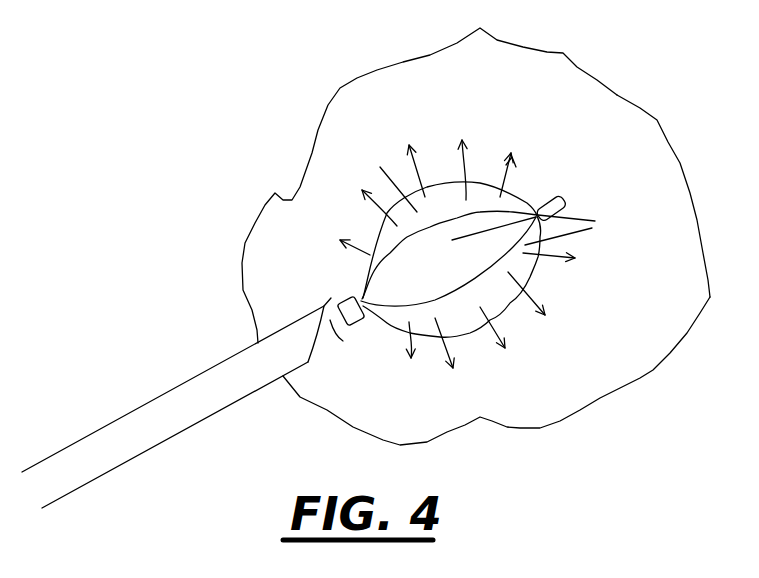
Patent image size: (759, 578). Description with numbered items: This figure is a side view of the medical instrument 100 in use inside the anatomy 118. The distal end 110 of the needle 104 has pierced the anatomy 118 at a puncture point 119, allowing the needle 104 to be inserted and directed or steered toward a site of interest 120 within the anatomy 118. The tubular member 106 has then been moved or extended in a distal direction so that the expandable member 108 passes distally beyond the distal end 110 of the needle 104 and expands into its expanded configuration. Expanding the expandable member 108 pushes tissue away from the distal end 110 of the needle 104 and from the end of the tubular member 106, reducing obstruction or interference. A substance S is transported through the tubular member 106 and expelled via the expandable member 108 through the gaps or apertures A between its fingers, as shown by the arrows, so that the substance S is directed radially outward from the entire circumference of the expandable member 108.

The medical instrument 100 is at (157, 298).
The needle 104 is at (88, 460).
The tubular member 106 is at (329, 326).
The expandable member 108 is at (491, 123).
The distal end of the needle 110 is at (310, 355).
The anatomy 118 is at (476, 236).
The puncture point 119 is at (258, 343).
The site of interest 120 is at (658, 152).